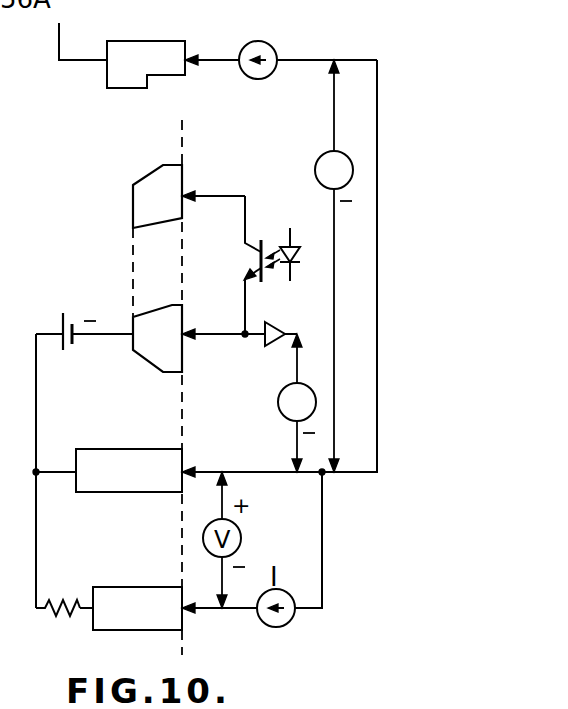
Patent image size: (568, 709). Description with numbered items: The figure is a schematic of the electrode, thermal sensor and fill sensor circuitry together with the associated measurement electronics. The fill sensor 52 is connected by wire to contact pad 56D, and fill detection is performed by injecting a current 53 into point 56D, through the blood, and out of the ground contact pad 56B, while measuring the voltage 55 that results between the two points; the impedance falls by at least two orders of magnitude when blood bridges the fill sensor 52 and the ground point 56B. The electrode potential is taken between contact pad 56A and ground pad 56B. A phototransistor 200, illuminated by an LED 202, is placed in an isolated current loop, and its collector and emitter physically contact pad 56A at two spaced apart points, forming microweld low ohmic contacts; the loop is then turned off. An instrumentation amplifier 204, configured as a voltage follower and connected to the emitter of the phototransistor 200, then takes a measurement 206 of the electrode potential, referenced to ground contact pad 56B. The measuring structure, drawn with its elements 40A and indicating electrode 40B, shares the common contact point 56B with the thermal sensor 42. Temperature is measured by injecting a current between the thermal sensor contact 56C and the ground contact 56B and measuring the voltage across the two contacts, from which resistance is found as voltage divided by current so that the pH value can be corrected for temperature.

The fill sensor 52 is at (58, 45).
The contact pad 56D is at (121, 83).
The current 53 is at (272, 53).
The voltage 55 is at (322, 160).
The contact pad 56A is at (141, 180).
The phototransistor 200 is at (250, 258).
The LED 202 is at (296, 242).
The instrumentation amplifier 204 is at (282, 325).
The measurement 206 is at (278, 404).
The measuring structure element 40A is at (76, 340).
The indicating electrode 40B is at (62, 352).
The ground contact pad 56B is at (145, 449).
The thermal sensor contact 56C is at (144, 587).
The thermal sensor 42 is at (63, 612).